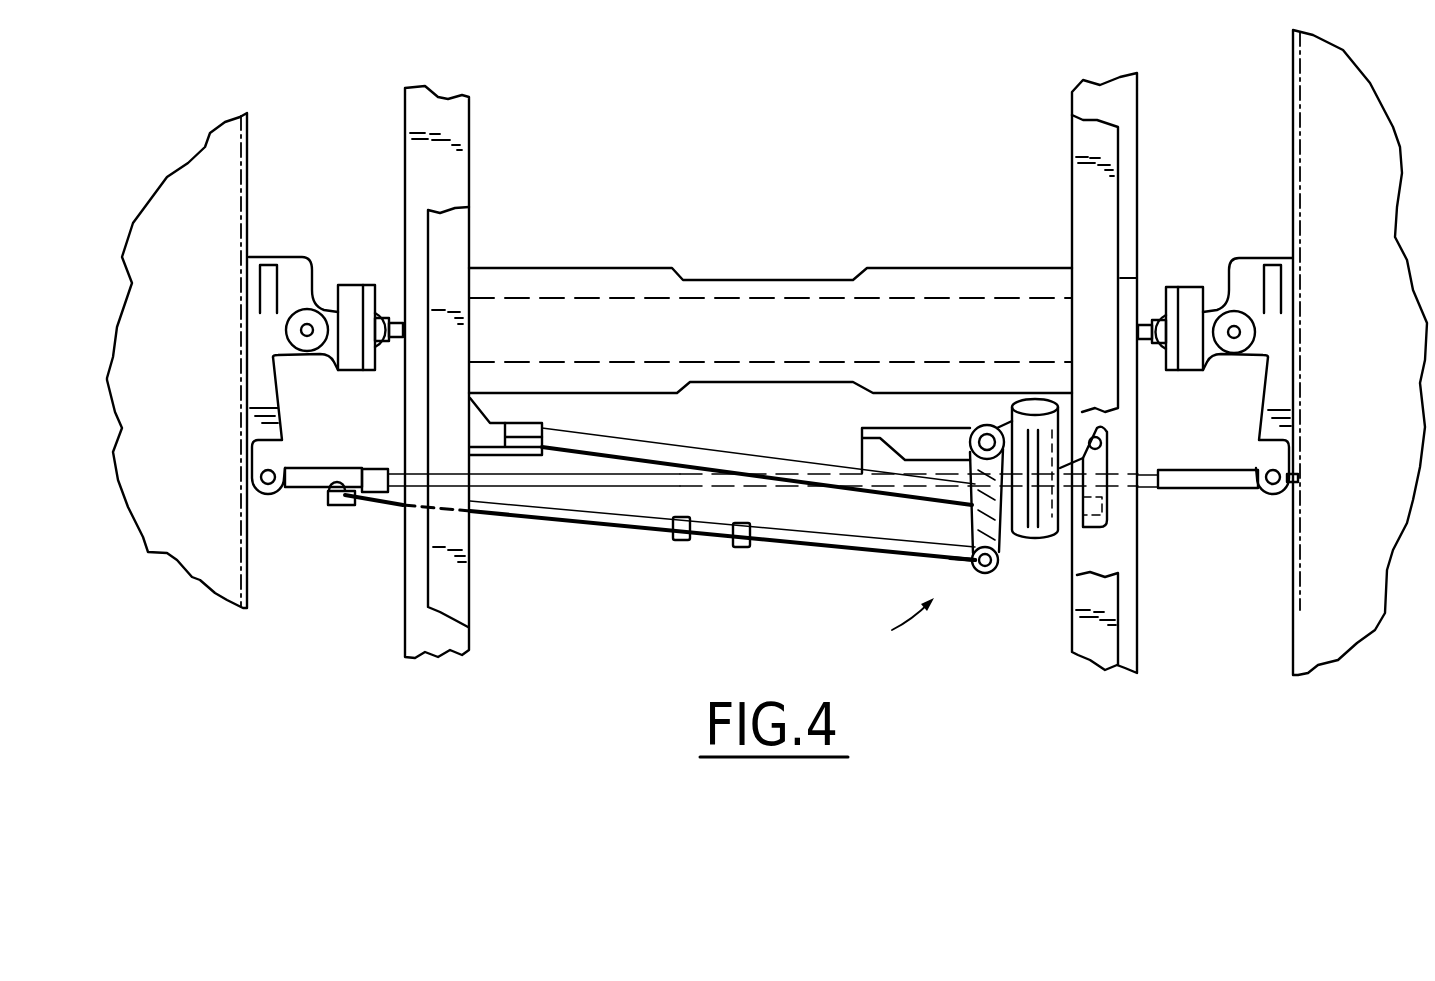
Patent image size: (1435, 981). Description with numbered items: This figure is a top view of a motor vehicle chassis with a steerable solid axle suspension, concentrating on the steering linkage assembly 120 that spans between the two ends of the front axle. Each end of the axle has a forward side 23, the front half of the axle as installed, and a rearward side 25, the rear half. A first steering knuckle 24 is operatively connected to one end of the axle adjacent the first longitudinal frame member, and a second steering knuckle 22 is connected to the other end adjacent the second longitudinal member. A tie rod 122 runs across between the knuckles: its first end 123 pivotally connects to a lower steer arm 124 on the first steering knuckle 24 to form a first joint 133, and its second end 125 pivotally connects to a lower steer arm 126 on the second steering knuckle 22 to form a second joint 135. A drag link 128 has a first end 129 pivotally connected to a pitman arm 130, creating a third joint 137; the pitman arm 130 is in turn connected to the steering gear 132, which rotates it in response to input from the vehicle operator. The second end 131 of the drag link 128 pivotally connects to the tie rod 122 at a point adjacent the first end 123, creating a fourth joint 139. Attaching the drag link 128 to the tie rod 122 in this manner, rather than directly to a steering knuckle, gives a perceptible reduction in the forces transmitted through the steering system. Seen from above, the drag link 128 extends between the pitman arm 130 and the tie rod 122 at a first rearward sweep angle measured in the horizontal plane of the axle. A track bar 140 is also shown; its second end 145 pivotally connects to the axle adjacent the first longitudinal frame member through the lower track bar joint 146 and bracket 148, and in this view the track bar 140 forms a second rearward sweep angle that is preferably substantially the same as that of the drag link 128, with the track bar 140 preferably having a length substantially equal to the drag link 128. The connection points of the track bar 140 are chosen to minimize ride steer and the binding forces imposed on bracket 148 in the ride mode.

The second steering knuckle 22 is at (1268, 366).
The forward side 23 is at (1157, 367).
The first steering knuckle 24 is at (290, 257).
The rearward side 25 is at (1150, 298).
The steering linkage assembly 120 is at (884, 623).
The tie rod 122 is at (740, 483).
The first end 123 is at (303, 488).
The lower steer arm 124 is at (265, 460).
The second end 125 is at (1250, 487).
The lower steer arm 126 is at (1260, 445).
The drag link 128 is at (613, 537).
The first end 129 is at (960, 562).
The pitman arm 130 is at (1000, 565).
The second end 131 is at (380, 505).
The steering gear 132 is at (1012, 417).
The first joint 133 is at (320, 495).
The second joint 135 is at (1292, 479).
The third joint 137 is at (977, 531).
The fourth joint 139 is at (362, 482).
The track bar 140 is at (773, 462).
The second end 145 is at (582, 442).
The lower track bar joint 146 is at (532, 443).
The bracket 148 is at (522, 422).